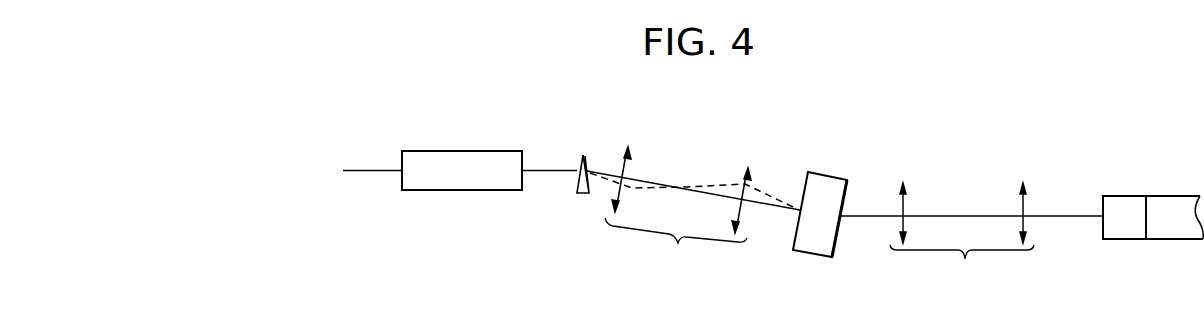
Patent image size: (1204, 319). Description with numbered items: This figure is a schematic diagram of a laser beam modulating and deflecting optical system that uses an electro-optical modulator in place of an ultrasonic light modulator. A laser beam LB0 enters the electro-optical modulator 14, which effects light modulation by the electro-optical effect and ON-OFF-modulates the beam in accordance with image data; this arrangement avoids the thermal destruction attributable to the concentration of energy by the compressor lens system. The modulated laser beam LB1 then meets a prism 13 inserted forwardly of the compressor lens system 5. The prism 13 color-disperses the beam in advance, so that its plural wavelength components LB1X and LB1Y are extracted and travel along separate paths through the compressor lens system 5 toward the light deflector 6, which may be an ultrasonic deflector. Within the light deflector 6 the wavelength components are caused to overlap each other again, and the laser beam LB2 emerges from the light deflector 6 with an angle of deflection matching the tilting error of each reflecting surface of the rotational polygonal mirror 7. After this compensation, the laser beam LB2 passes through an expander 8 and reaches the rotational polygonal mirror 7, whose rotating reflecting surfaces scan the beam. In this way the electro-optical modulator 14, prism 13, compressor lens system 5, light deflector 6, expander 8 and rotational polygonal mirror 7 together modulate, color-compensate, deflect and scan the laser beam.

The laser beam LB0 is at (365, 170).
The electro-optical modulator 14 is at (437, 187).
The modulated laser beam LB1 is at (548, 173).
The prism 13 is at (585, 163).
The wavelength component LB1X is at (757, 202).
The wavelength component LB1Y is at (688, 187).
The compressor lens system 5 is at (678, 210).
The light deflector 6 is at (823, 180).
The laser beam LB2 is at (873, 218).
The expander 8 is at (962, 238).
The rotational polygonal mirror 7 is at (1157, 232).